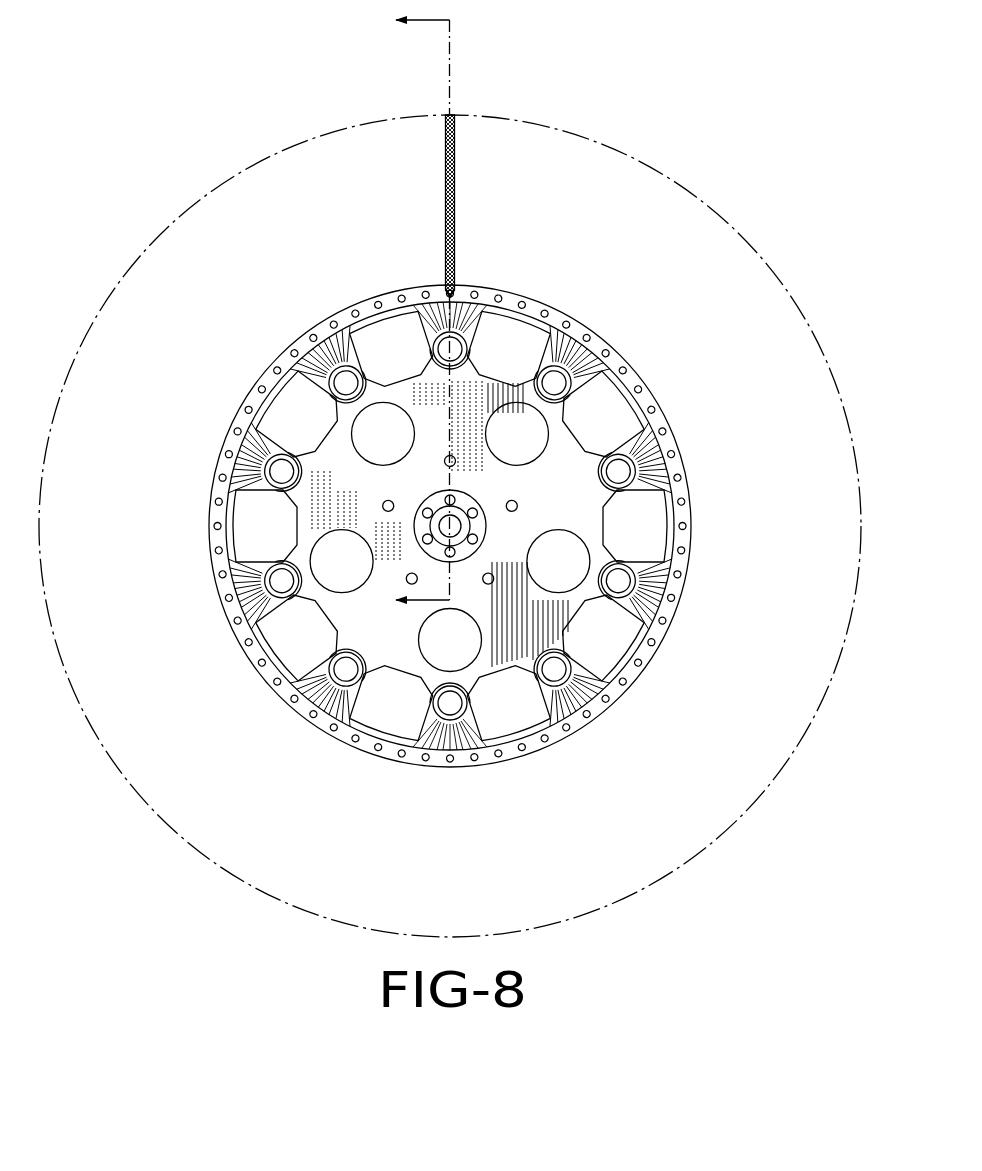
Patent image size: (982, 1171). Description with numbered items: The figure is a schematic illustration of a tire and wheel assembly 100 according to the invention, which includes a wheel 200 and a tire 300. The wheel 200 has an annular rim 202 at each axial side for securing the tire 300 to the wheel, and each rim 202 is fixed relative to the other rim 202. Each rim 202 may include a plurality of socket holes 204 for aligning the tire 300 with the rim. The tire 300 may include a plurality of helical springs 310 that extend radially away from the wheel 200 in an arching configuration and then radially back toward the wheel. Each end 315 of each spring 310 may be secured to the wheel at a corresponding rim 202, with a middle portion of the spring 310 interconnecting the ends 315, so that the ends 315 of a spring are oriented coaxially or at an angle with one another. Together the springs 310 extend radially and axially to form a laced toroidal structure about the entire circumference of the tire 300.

The assembly 100 is at (138, 110).
The wheel 200 is at (449, 515).
The annular rim 202 is at (270, 383).
The socket holes 204 is at (543, 317).
The tire 300 is at (591, 135).
The helical spring 310 is at (445, 182).
The end of spring 315 is at (455, 297).